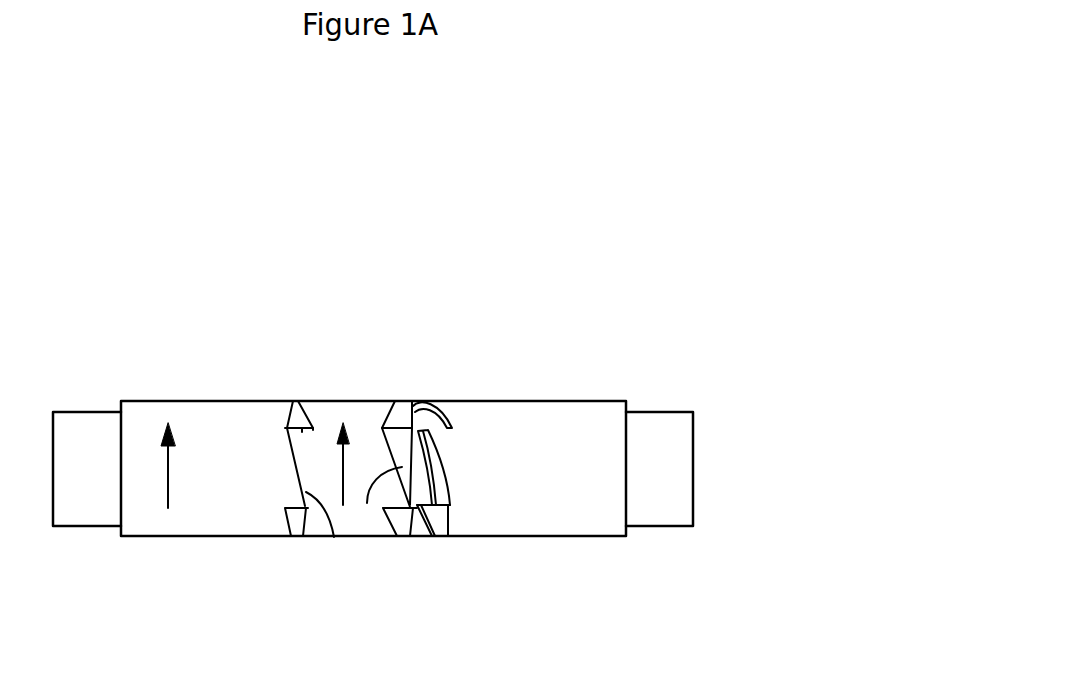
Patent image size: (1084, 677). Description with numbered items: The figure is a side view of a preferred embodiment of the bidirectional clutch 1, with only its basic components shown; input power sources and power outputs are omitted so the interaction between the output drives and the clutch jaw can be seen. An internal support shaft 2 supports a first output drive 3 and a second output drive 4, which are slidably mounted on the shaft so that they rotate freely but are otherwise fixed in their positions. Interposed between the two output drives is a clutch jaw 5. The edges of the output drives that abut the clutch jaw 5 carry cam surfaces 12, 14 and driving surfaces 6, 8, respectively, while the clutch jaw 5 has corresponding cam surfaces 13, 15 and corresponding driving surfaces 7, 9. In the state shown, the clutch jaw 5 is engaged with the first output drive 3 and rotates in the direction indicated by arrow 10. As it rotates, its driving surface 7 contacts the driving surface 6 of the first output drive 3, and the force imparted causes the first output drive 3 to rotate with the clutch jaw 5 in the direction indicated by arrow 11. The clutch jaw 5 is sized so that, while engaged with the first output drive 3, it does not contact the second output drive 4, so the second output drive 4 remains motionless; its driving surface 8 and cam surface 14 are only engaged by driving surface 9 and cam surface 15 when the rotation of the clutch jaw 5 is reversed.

The bidirectional clutch 1 is at (185, 248).
The internal support shaft 2 is at (62, 460).
The first output drive 3 is at (142, 515).
The second output drive 4 is at (528, 515).
The clutch jaw 5 is at (333, 408).
The driving surface 6 is at (291, 402).
The driving surface 7 is at (302, 428).
The driving surface 8 is at (446, 430).
The driving surface 9 is at (395, 401).
The arrow 10 is at (348, 482).
The arrow 11 is at (170, 460).
The cam surface 12 is at (288, 462).
The cam surface 13 is at (334, 537).
The cam surface 14 is at (448, 484).
The cam surface 15 is at (375, 499).